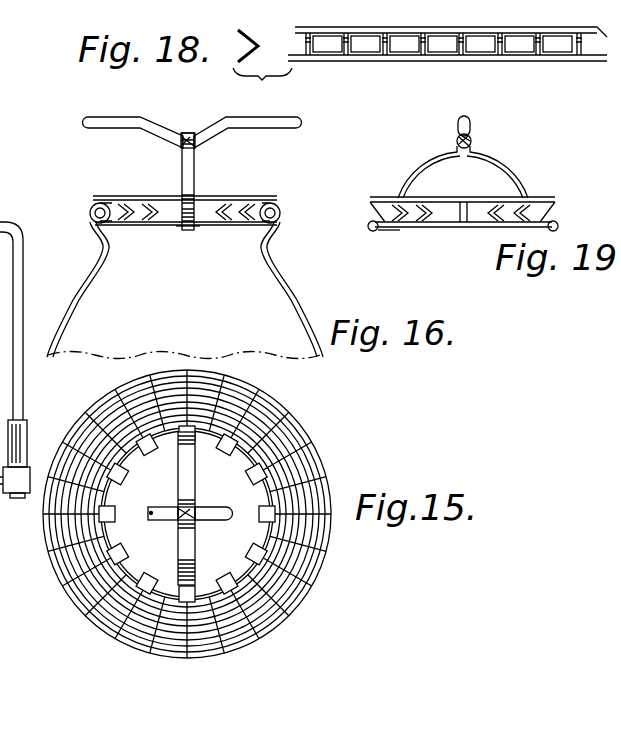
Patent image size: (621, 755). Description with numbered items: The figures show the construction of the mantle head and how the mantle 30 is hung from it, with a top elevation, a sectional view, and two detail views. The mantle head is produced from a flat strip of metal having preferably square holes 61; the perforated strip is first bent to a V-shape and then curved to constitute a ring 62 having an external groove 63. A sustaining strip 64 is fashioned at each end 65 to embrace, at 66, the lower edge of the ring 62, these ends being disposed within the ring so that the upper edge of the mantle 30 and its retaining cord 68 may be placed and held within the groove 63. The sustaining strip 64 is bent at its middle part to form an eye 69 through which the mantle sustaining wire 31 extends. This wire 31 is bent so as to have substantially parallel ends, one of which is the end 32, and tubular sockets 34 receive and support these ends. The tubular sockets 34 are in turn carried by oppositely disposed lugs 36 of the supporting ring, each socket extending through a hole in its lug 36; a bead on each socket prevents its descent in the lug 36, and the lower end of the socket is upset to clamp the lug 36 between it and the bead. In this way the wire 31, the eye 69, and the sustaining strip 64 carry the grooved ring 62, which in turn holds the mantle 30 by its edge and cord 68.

In FIG. 16, the mantle 30 is at (292, 276).
In FIG. 15, the mantle 30 is at (293, 444).
In FIG. 16, the wire 31 is at (277, 124).
In FIG. 19, the wire 31 is at (471, 124).
In FIG. 15, the wire 31 is at (214, 521).
In FIG. 15, the end of the wire 32 is at (23, 383).
In FIG. 15, the tubular socket 34 is at (27, 434).
In FIG. 15, the lug 36 is at (8, 499).
In FIG. 18, the square hole 61 is at (445, 46).
In FIG. 16, the ring 62 is at (236, 226).
In FIG. 19, the ring 62 is at (407, 228).
In FIG. 15, the ring 62 is at (108, 497).
In FIG. 16, the external groove 63 is at (236, 205).
In FIG. 19, the external groove 63 is at (374, 208).
In FIG. 16, the sustaining strip 64 is at (184, 178).
In FIG. 19, the sustaining strip 64 is at (412, 180).
In FIG. 15, the sustaining strip 64 is at (191, 541).
In FIG. 16, the end of the sustaining strip 65 is at (182, 228).
In FIG. 19, the end of the sustaining strip 65 is at (370, 230).
In FIG. 16, the embracing portion 66 is at (176, 228).
In FIG. 19, the embracing portion 66 is at (380, 230).
In FIG. 16, the retaining cord 68 is at (90, 222).
In FIG. 16, the eye 69 is at (182, 140).
In FIG. 19, the eye 69 is at (472, 143).
In FIG. 15, the eye 69 is at (178, 522).